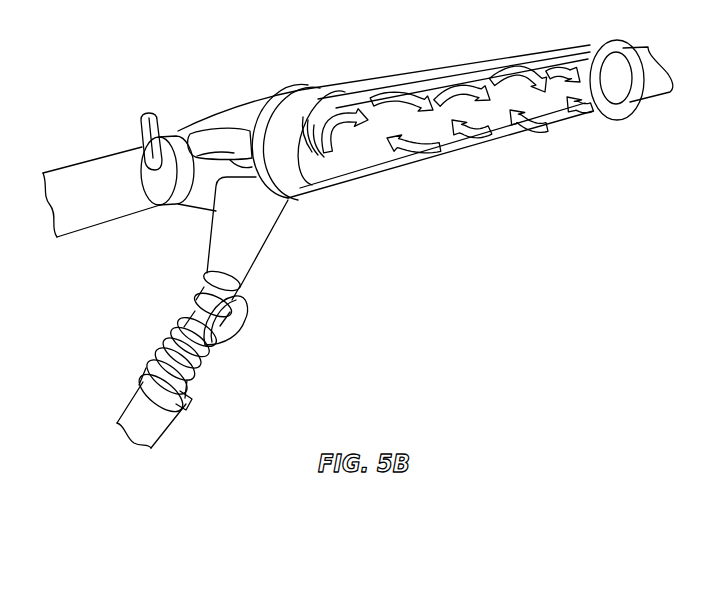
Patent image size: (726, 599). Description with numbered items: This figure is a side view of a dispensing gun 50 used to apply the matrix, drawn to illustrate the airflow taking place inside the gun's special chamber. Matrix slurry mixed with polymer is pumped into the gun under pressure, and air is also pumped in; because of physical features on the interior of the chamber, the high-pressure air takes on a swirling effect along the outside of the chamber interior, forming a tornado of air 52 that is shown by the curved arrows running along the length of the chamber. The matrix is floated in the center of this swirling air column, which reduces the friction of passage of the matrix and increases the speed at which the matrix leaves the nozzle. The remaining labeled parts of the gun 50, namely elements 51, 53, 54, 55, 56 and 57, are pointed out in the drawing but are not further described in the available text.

The gun 50 is at (114, 366).
The clamp 51 is at (148, 113).
The tornado of air 52 is at (350, 103).
The helical flow path 53 is at (503, 90).
The return flow path 54 is at (570, 110).
The handle 55 is at (253, 233).
The connector 56 is at (207, 350).
The rail 57 is at (427, 157).